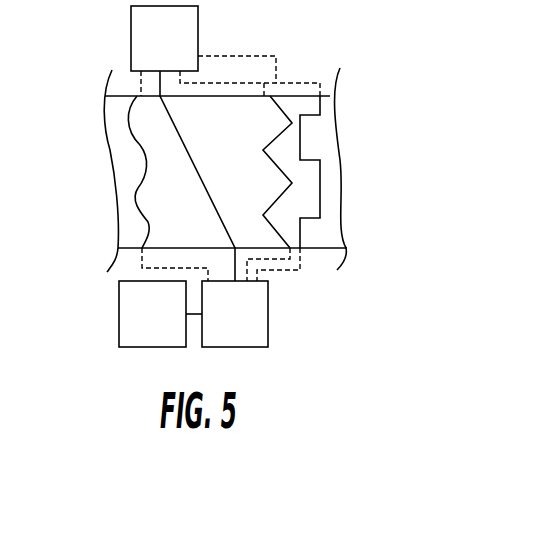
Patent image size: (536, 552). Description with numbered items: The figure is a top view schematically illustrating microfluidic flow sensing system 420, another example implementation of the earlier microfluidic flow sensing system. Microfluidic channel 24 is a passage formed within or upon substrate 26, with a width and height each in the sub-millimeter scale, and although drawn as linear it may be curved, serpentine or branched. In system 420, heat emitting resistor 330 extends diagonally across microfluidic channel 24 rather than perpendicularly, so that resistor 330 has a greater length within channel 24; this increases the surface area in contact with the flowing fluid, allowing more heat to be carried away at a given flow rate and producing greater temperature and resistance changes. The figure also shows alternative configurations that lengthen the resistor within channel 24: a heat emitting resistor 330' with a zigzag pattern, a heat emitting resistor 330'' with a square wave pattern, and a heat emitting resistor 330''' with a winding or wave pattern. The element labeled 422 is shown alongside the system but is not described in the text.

The microfluidic flow sensing system 420 is at (66, 96).
The microfluidic channel 24 is at (240, 97).
The substrate 26 is at (126, 219).
The heat emitting resistor 330 is at (218, 147).
The heat emitting resistor 330' is at (253, 172).
The heat emitting resistor 330'' is at (307, 217).
The heat emitting resistor 330''' is at (87, 172).
The electrical component E 422 is at (132, 356).